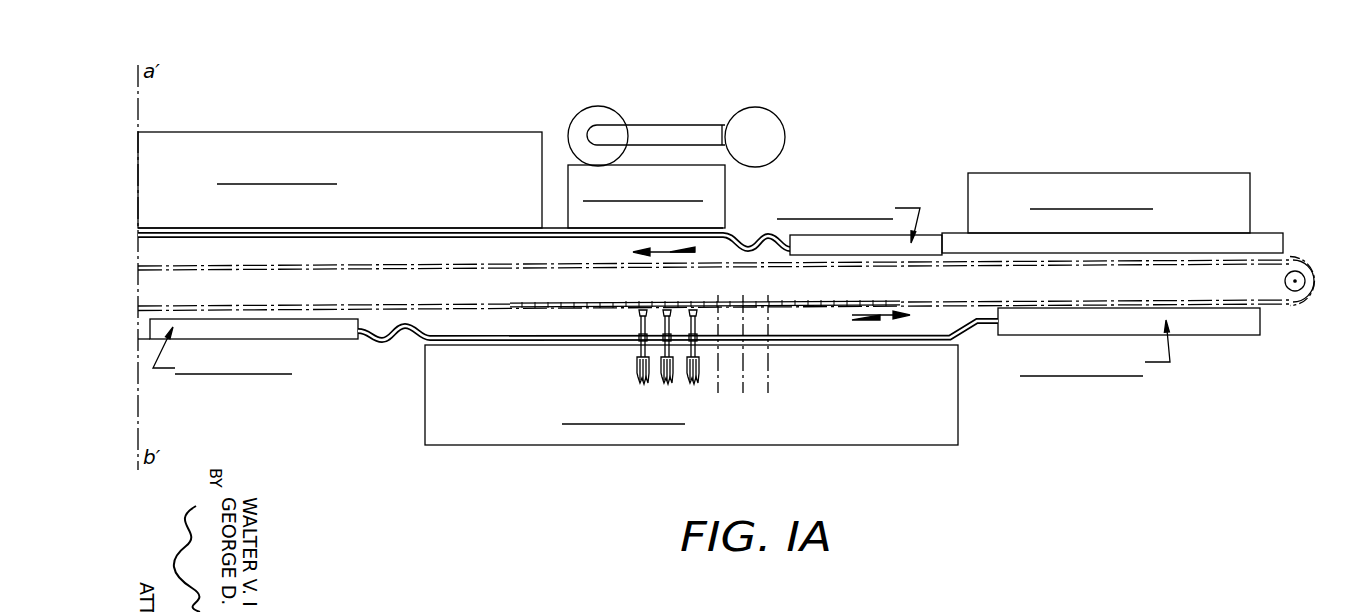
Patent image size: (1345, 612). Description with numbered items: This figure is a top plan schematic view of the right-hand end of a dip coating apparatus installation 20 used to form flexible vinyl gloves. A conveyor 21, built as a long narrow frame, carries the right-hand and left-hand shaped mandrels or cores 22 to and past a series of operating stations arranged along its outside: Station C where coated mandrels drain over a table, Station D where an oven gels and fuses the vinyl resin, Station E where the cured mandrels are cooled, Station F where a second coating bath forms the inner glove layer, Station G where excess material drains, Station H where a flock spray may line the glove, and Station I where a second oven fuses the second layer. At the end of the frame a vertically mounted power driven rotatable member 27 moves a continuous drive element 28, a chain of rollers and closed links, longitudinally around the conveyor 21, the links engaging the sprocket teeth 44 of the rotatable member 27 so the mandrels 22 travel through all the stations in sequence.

The dip coating apparatus installation 20 is at (1036, 122).
The conveyor 21 is at (382, 300).
The mandrels or cores 22 is at (640, 360).
The power driven rotatable member 27 is at (1277, 265).
The drive element (upper chain) 28 is at (836, 293).
The sprocket teeth 44 is at (1279, 291).